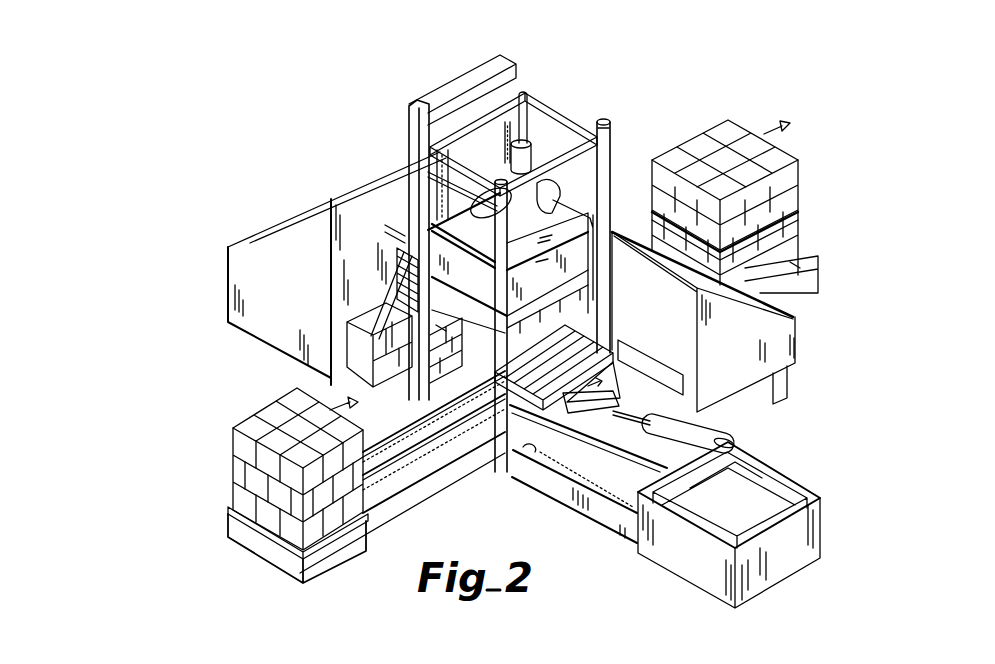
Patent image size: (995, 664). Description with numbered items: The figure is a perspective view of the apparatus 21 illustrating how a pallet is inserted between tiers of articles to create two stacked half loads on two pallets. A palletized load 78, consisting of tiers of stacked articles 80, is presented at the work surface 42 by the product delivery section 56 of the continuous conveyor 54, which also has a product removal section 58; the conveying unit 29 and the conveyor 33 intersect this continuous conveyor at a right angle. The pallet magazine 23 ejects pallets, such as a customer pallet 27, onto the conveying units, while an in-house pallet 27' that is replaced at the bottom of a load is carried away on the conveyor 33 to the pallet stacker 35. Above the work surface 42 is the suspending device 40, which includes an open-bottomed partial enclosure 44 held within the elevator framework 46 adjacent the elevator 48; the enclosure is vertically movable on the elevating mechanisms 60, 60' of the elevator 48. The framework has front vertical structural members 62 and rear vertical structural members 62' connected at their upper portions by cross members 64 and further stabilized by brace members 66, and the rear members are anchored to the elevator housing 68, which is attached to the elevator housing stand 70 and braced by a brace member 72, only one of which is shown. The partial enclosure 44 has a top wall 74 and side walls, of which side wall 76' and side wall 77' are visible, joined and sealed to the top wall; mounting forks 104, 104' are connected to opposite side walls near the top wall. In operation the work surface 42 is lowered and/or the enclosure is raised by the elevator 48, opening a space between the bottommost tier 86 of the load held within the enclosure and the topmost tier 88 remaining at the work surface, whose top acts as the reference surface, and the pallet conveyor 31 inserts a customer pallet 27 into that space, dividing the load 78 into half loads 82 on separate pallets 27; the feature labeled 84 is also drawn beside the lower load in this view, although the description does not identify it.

The apparatus 21 is at (250, 122).
The pallet magazine 23 is at (318, 207).
The pallet 27 is at (678, 274).
The in-house pallet 27' is at (402, 472).
The conveying unit 29 is at (368, 357).
The pallet conveyor 31 is at (665, 420).
The conveyor 33 is at (600, 513).
The pallet stacker 35 is at (792, 556).
The suspending device 40 is at (637, 118).
The work surface 42 is at (517, 422).
The partial enclosure 44 is at (560, 277).
The elevator framework 46 is at (603, 120).
The elevator 48 is at (450, 93).
The continuous conveyor 54 is at (323, 567).
The product delivery section 56 is at (253, 540).
The product removal section 58 is at (797, 312).
The elevating mechanism 60 is at (514, 120).
The elevating mechanism 60' is at (391, 160).
The front vertical structural member 62 is at (545, 262).
The rear vertical structural member 62' is at (395, 145).
The cross member 64 is at (440, 125).
The brace member 66 is at (455, 197).
The elevator housing 68 is at (473, 63).
The elevator housing stand 70 is at (372, 383).
The brace member 72 is at (447, 246).
The top wall 74 is at (570, 212).
The side wall 76' is at (329, 249).
The side wall 77' is at (547, 267).
The palletized load 78 is at (200, 500).
The stacked articles 80 is at (245, 473).
The half load 82 is at (760, 88).
The straps 84 is at (378, 448).
The bottommost tier 86 is at (441, 328).
The topmost tier 88 is at (447, 362).
The partial enclosure mounting fork 104 is at (581, 246).
The partial enclosure mounting fork 104' is at (342, 201).